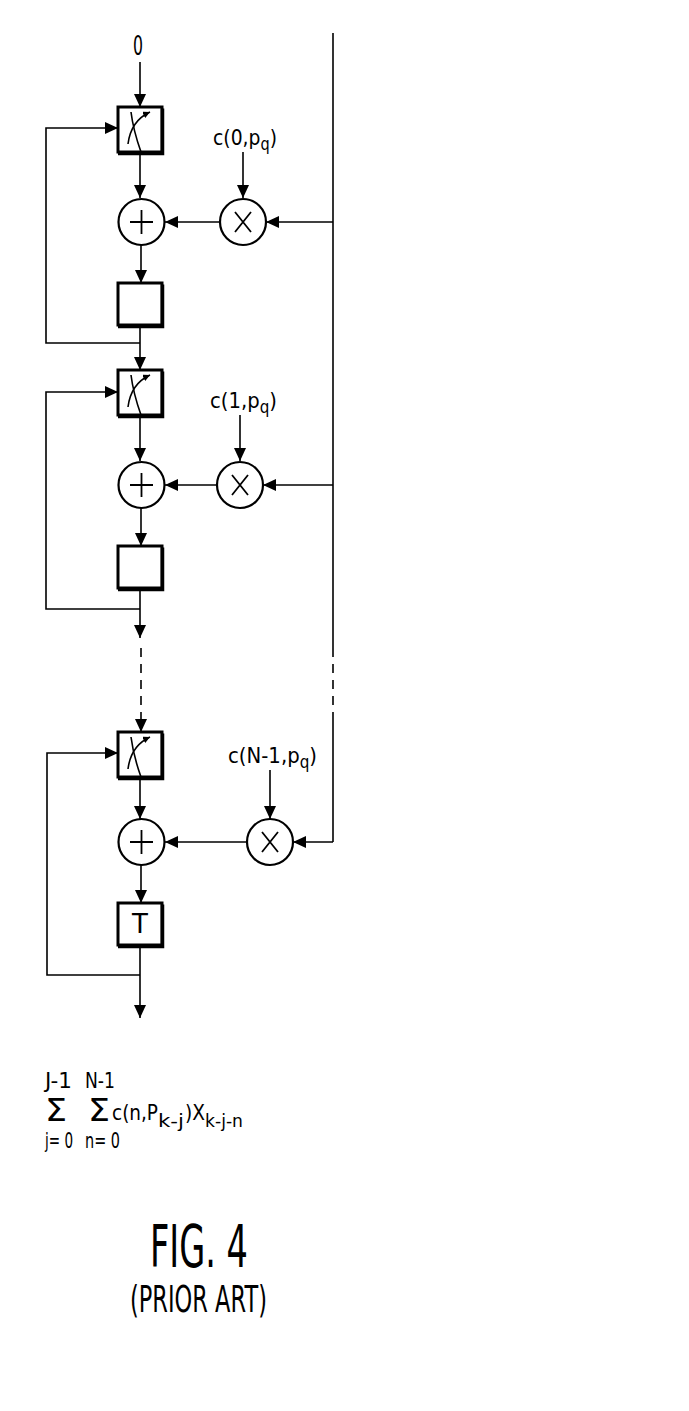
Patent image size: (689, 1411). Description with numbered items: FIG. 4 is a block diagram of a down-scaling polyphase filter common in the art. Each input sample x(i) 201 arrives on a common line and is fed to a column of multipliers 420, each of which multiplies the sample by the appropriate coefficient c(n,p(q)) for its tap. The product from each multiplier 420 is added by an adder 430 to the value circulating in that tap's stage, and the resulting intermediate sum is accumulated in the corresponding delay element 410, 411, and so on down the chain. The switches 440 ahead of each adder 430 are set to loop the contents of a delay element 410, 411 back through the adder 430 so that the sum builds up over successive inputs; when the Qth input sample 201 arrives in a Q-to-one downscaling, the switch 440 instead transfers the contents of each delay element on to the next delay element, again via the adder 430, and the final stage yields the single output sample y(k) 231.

The input sample x(i) 201 is at (310, 16).
The switch 440 is at (110, 119).
The adder 430 is at (118, 222).
The multiplier 420 is at (252, 242).
The delay element 410 is at (165, 306).
The delay element 411 is at (165, 572).
The output sample y(k) 231 is at (161, 1048).